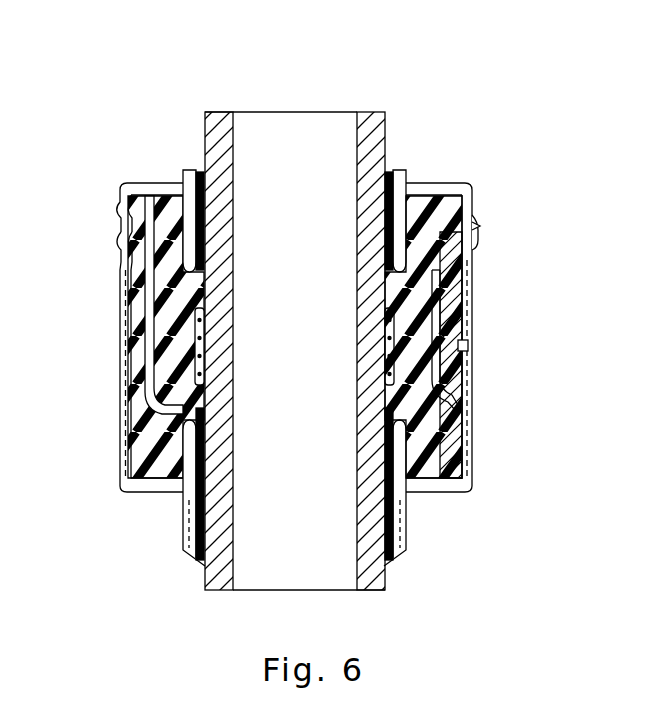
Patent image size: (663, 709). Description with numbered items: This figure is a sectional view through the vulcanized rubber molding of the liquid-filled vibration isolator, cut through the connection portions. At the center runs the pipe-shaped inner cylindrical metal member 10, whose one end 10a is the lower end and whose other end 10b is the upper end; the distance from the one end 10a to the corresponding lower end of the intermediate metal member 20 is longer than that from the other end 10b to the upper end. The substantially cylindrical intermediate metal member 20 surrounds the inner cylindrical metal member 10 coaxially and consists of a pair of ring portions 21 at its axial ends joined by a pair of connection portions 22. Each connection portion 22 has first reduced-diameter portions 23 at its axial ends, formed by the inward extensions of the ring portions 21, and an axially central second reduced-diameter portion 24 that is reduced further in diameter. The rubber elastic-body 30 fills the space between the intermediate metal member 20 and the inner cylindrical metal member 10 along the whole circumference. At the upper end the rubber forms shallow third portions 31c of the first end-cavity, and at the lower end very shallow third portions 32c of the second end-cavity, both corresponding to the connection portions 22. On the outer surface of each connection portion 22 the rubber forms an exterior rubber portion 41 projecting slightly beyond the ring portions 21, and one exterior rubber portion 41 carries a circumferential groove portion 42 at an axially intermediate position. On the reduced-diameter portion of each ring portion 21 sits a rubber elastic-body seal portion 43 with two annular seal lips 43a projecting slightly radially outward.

The inner cylindrical metal member 10 is at (370, 106).
The one end of the inner cylindrical metal member 10a is at (366, 592).
The other end of the inner cylindrical metal member 10b is at (216, 112).
The intermediate metal member 20 is at (121, 317).
The ring portions 21 is at (126, 200).
The connection portions 22 is at (121, 268).
The first reduced-diameter portions 23 is at (118, 244).
The second reduced-diameter portion 24 is at (150, 328).
The rubber elastic-body 30 is at (481, 337).
The third portions of the first end-cavity portion 31c is at (182, 214).
The third portions of the second end-cavity portion 32c is at (172, 462).
The exterior rubber portion 41 is at (473, 327).
The groove portion 42 is at (470, 348).
The rubber elastic-body seal portion 43 is at (466, 222).
The annular seal lips 43a is at (470, 228).